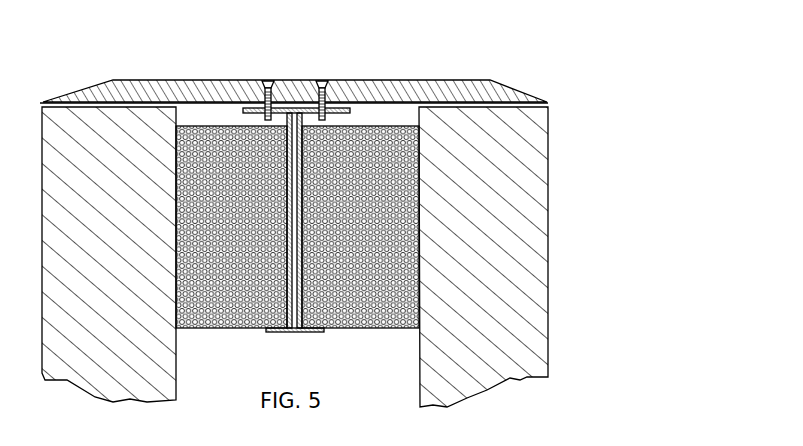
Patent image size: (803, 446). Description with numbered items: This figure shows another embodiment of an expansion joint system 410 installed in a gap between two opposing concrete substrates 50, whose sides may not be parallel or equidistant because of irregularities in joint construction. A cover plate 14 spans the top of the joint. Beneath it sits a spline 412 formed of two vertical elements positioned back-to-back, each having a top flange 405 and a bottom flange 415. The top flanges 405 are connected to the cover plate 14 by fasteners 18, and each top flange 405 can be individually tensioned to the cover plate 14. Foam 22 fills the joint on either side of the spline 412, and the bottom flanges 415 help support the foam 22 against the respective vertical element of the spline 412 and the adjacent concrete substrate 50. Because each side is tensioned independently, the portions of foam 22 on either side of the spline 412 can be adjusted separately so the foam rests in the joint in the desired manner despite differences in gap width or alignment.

The cover plate 14 is at (415, 82).
The fasteners 18 is at (322, 83).
The foam 22 is at (218, 314).
The concrete substrates 50 is at (110, 406).
The top flange 405 is at (236, 83).
The expansion joint system 410 is at (674, 189).
The spline 412 is at (266, 336).
The bottom flange 415 is at (333, 333).